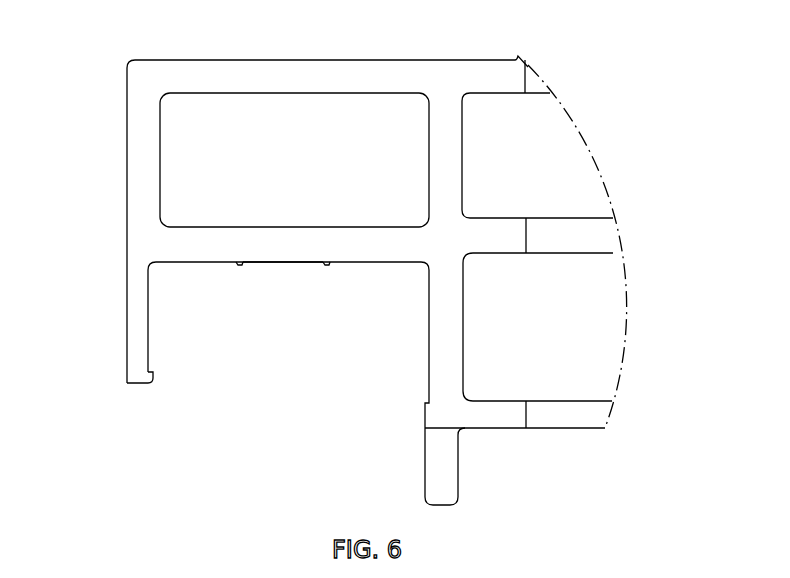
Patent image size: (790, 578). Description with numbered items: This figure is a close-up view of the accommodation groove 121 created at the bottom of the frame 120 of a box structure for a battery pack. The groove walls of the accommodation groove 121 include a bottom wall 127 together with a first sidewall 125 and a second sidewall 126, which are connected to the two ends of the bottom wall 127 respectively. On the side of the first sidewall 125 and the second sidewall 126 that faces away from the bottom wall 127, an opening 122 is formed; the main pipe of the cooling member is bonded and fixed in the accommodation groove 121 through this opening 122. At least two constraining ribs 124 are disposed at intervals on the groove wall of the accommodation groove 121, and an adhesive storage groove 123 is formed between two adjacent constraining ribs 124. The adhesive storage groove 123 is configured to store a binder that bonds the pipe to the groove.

The frame 120 is at (140, 172).
The accommodation groove 121 is at (185, 335).
The opening 122 is at (232, 384).
The adhesive storage groove 123 is at (285, 262).
The constraining rib 124 is at (150, 383).
The first sidewall 125 is at (148, 309).
The second sidewall 126 is at (430, 332).
The bottom wall 127 is at (230, 262).